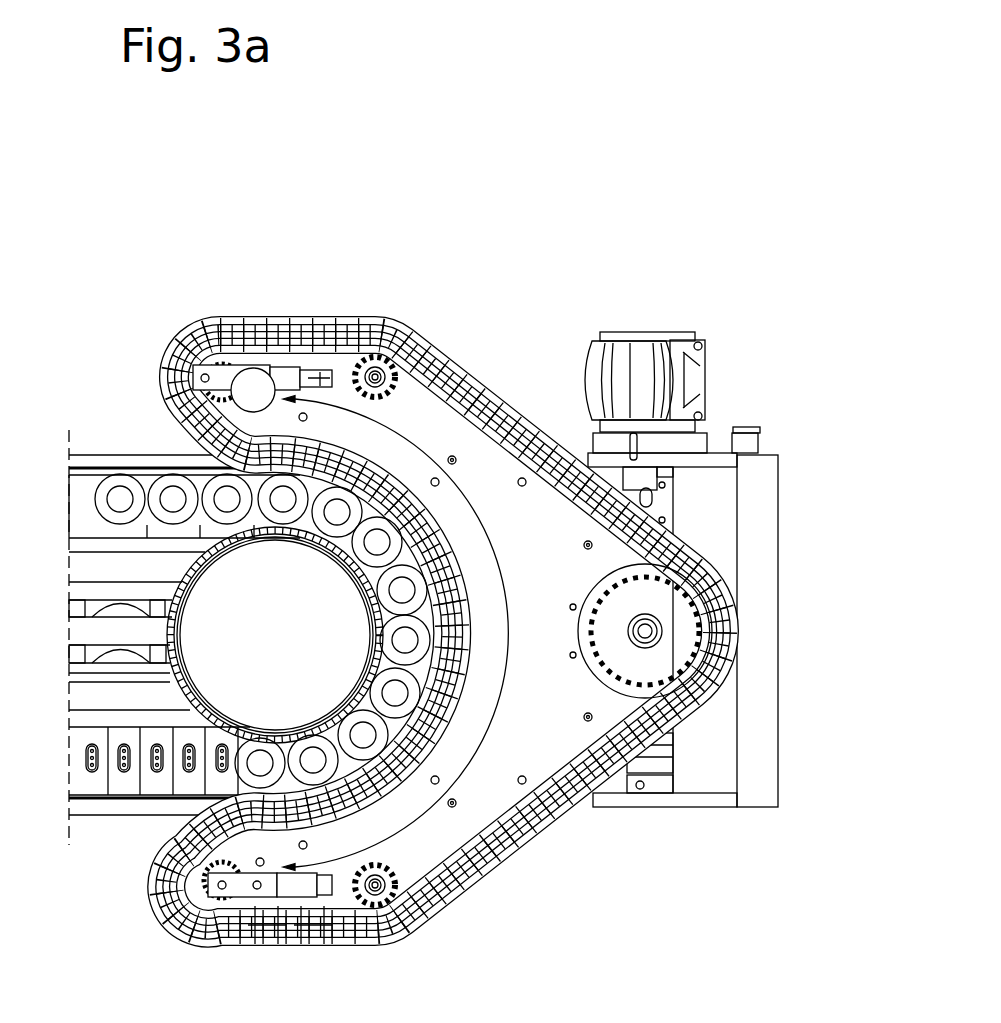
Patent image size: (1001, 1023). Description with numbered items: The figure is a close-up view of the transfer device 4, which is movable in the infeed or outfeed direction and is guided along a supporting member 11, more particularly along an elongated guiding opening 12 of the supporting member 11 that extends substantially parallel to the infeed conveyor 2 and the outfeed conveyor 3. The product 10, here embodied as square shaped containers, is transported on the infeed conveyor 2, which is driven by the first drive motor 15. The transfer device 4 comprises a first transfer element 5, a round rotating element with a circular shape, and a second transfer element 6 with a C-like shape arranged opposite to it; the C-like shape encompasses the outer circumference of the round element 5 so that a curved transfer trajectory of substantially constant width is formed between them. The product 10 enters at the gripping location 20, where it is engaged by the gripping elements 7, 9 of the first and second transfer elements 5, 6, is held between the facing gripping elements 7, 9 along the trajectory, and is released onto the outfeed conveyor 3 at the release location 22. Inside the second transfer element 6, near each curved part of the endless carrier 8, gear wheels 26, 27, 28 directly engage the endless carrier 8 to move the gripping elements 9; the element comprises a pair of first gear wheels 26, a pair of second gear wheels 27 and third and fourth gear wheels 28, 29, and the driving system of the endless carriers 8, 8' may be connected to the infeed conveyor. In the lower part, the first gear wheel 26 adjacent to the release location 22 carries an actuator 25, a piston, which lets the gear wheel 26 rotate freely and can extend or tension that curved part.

The infeed conveyor 2 is at (85, 473).
The outfeed conveyor 3 is at (87, 783).
The transfer device 4 is at (388, 300).
The first transfer element 5 is at (207, 652).
The second transfer element 6 is at (487, 462).
The gripping element 7 is at (260, 940).
The endless carrier 8 is at (313, 954).
The endless carrier 8' is at (134, 726).
The gripping element 9 is at (170, 630).
The product 10 is at (173, 497).
The supporting member 11 is at (100, 545).
The guiding opening 12 is at (75, 612).
The first drive motor 15 is at (643, 342).
The gripping location 20 is at (178, 447).
The release location 22 is at (218, 792).
The actuator 25 is at (232, 890).
The first gear wheel 26 is at (207, 357).
The second gear wheel 27 is at (395, 375).
The third gear wheel 28 is at (660, 663).
The fourth gear wheel 29 is at (613, 690).